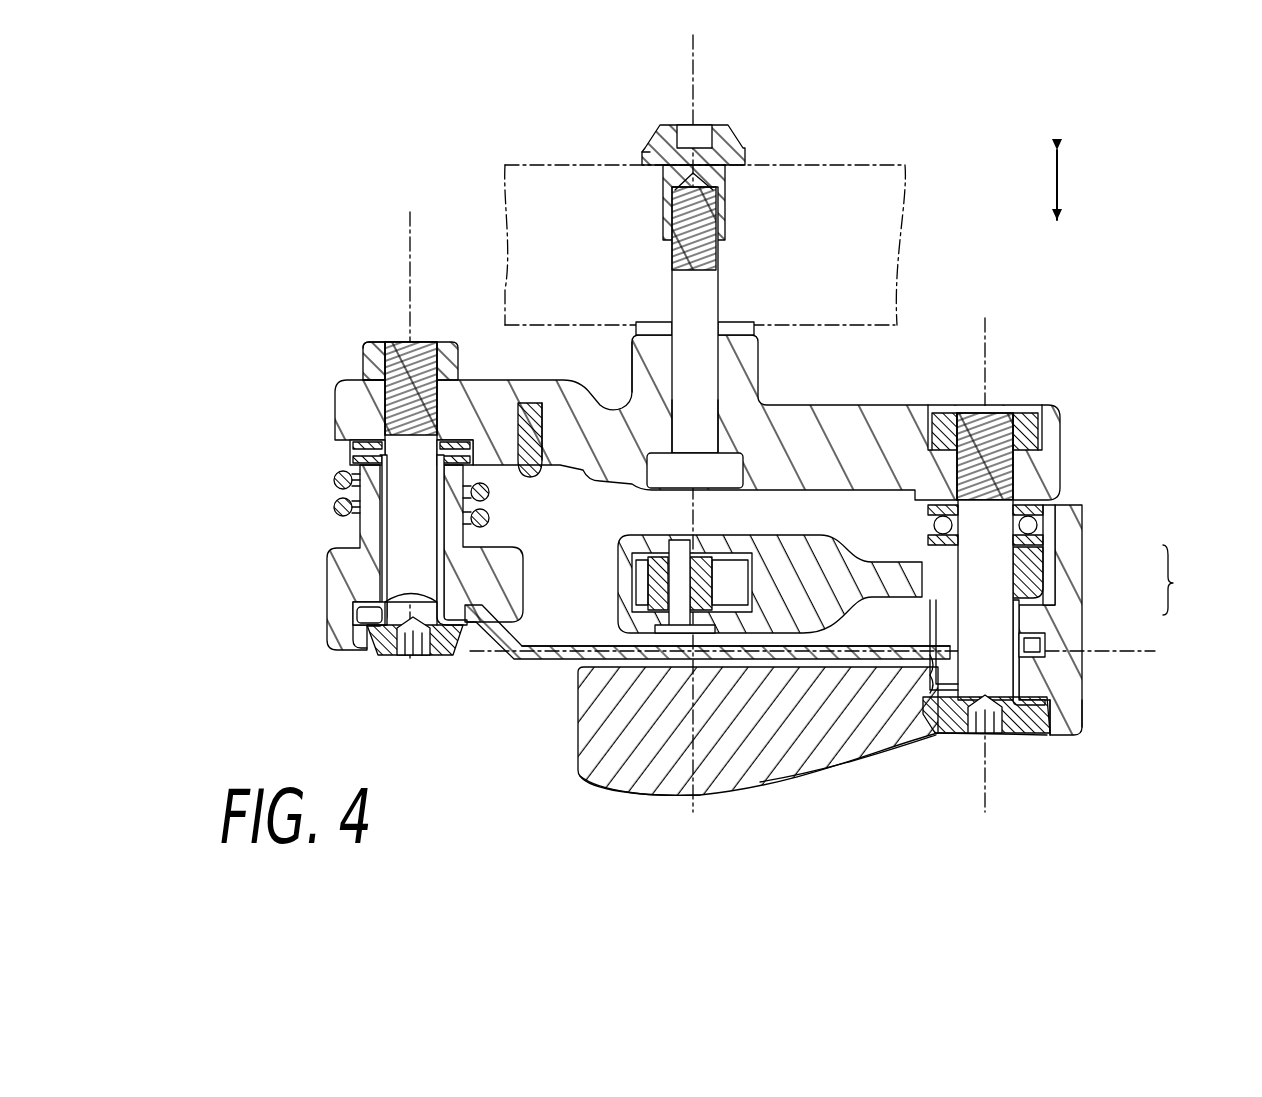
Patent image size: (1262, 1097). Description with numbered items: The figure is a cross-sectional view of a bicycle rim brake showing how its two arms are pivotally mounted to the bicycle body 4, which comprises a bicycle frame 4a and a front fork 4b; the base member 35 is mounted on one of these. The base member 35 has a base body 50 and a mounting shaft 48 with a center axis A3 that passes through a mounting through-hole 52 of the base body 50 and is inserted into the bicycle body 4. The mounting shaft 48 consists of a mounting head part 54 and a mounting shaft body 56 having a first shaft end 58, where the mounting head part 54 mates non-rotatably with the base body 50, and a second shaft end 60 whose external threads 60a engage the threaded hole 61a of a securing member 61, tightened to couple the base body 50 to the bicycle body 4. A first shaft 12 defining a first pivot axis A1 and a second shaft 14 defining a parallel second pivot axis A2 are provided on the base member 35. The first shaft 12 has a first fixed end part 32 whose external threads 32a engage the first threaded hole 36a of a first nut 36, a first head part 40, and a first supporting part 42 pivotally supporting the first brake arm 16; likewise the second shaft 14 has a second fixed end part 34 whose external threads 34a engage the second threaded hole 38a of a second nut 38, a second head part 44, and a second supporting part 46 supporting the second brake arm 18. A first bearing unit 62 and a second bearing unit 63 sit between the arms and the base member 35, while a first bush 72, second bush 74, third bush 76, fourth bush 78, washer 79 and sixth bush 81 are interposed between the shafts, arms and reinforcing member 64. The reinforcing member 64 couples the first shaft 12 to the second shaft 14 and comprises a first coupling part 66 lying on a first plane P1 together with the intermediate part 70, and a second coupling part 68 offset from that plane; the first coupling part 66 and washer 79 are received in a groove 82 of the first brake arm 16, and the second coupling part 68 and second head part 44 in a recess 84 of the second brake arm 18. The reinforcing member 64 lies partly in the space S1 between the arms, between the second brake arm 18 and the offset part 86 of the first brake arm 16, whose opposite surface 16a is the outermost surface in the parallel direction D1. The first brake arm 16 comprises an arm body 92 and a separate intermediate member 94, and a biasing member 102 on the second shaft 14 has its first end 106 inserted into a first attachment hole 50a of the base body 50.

The bicycle body 4 is at (897, 160).
The bicycle frame 4a is at (907, 186).
The front fork 4b is at (506, 245).
The first shaft 12 is at (960, 737).
The second shaft 14 is at (408, 658).
The first brake arm 16 is at (890, 670).
The opposite surface 16a is at (742, 793).
The second brake arm 18 is at (326, 598).
The first fixed end part 32 is at (1000, 426).
The external threads 32a is at (1022, 438).
The second fixed end part 34 is at (396, 345).
The external threads 34a is at (364, 374).
The base member 35 is at (1064, 437).
The first nut 36 is at (950, 418).
The first threaded hole 36a is at (977, 424).
The second nut 38 is at (448, 352).
The second threaded hole 38a is at (404, 352).
The first head part 40 is at (1017, 716).
The first supporting part 42 is at (1003, 551).
The second head part 44 is at (392, 652).
The second supporting part 46 is at (388, 541).
The mounting shaft 48 is at (663, 292).
The base body 50 is at (840, 408).
The first attachment hole 50a is at (535, 440).
The mounting through-hole 52 is at (723, 382).
The mounting head part 54 is at (662, 474).
The mounting shaft body 56 is at (704, 278).
The first shaft end 58 is at (710, 438).
The second shaft end 60 is at (704, 222).
The external threads 60a is at (708, 214).
The securing member 61 is at (656, 152).
The threaded hole 61a is at (687, 208).
The first bearing unit 62 is at (1048, 517).
The second bearing unit 63 is at (348, 455).
The reinforcing member 64 is at (548, 663).
The first coupling part 66 is at (1052, 674).
The second coupling part 68 is at (366, 622).
The intermediate part 70 is at (574, 672).
The first bush 72 is at (1032, 735).
The second bush 74 is at (455, 627).
The third bush 76 is at (1064, 710).
The fourth bush 78 is at (360, 606).
The washer 79 is at (1032, 612).
The sixth bush 81 is at (937, 549).
The groove 82 is at (335, 479).
The recess 84 is at (360, 646).
The offset part 86 is at (782, 754).
The arm body 92 is at (1084, 592).
The intermediate member 94 is at (1046, 577).
The biasing member 102 is at (350, 494).
The first end 106 is at (556, 445).
The first pivot axis A1 is at (990, 334).
The second pivot axis A2 is at (408, 232).
The center axis A3 is at (697, 64).
The parallel direction D1 is at (1060, 190).
The first plane P1 is at (1148, 653).
The space S1 is at (542, 620).